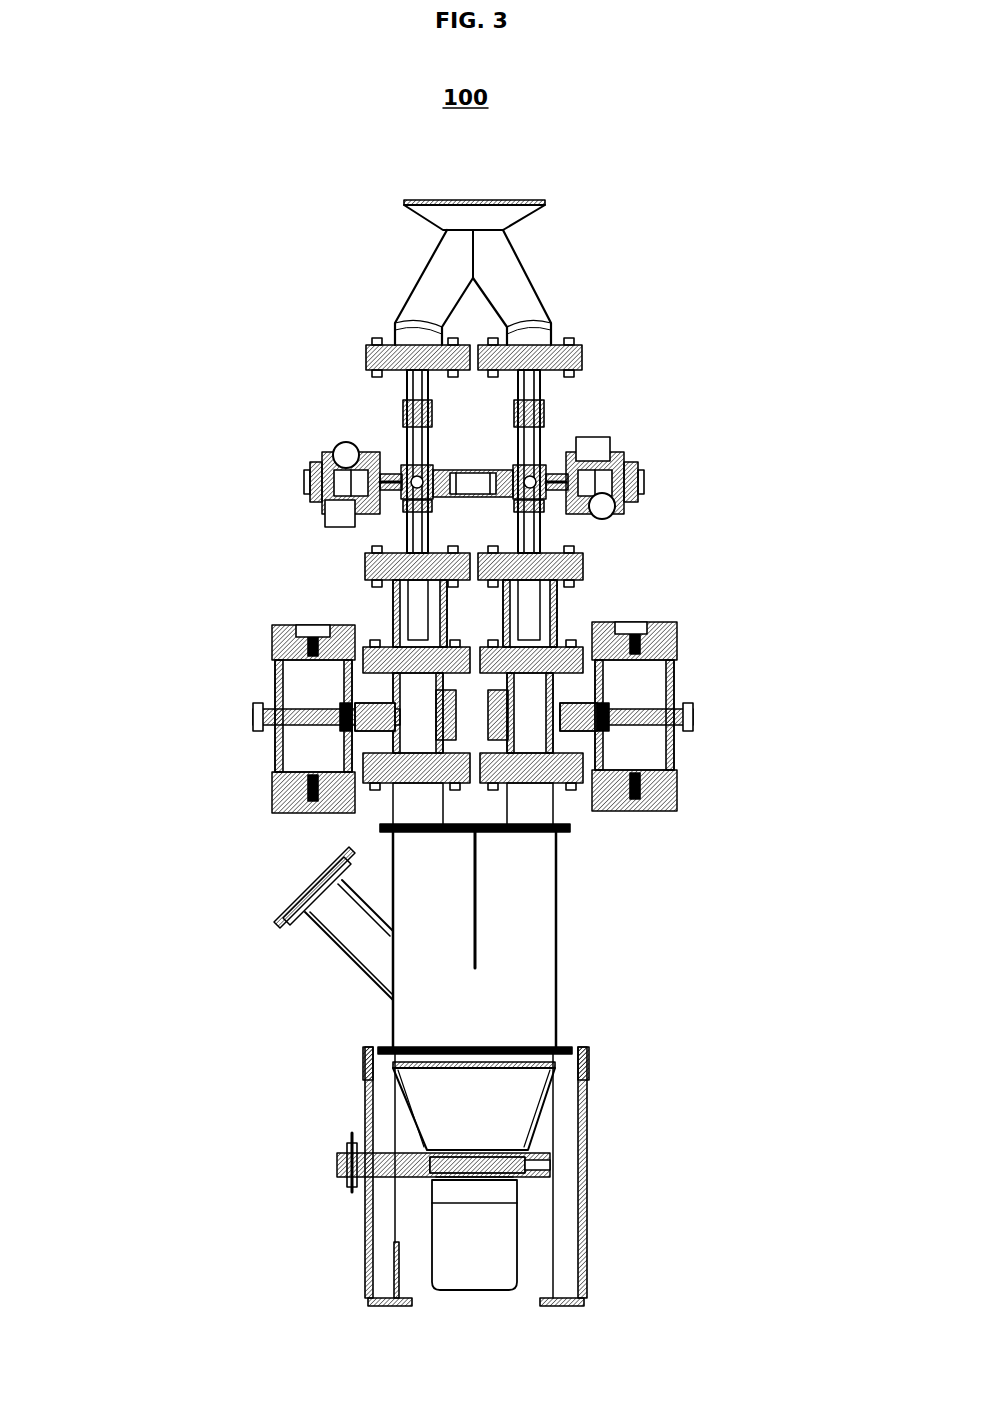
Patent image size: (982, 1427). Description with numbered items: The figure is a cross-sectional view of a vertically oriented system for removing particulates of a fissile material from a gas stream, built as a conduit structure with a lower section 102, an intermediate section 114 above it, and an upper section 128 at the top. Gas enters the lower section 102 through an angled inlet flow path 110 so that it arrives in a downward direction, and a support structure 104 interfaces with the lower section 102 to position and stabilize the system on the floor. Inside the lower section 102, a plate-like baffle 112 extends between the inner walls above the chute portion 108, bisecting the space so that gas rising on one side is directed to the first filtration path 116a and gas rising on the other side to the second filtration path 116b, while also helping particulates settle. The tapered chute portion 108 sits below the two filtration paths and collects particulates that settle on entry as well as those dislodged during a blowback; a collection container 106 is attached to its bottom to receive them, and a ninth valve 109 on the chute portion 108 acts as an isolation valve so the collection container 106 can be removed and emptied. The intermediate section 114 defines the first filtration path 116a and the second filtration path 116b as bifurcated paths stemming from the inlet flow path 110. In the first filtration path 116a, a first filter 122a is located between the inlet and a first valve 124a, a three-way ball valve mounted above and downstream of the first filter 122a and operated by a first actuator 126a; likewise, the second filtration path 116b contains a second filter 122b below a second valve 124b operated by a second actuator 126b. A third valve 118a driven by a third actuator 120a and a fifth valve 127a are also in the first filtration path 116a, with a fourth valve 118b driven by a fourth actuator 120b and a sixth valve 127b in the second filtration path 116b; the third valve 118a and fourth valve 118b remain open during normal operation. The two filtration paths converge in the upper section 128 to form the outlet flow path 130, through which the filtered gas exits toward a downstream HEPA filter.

The lower section 102 is at (577, 1004).
The support structure 104 is at (378, 1268).
The collection container 106 is at (502, 1238).
The chute portion 108 is at (528, 1102).
The ninth valve 109 is at (333, 1163).
The inlet flow path 110 is at (323, 898).
The baffle 112 is at (475, 937).
The intermediate section 114 is at (345, 542).
The first filtration path 116a is at (408, 802).
The second filtration path 116b is at (535, 802).
The third valve 118a is at (343, 702).
The fourth valve 118b is at (605, 700).
The third actuator 120a is at (257, 715).
The fourth actuator 120b is at (672, 716).
The first filter 122a is at (395, 603).
The second filter 122b is at (557, 604).
The first valve 124a is at (402, 465).
The second valve 124b is at (547, 467).
The first actuator 126a is at (310, 482).
The second actuator 126b is at (640, 480).
The fifth valve 127a is at (403, 417).
The sixth valve 127b is at (542, 415).
The upper section 128 is at (403, 245).
The outlet flow path 130 is at (493, 215).